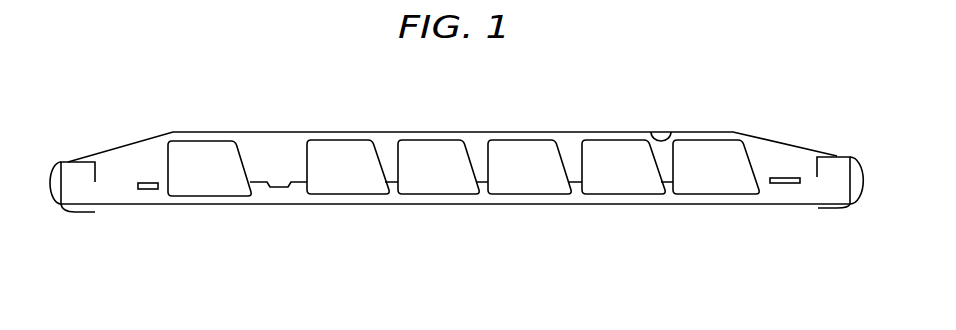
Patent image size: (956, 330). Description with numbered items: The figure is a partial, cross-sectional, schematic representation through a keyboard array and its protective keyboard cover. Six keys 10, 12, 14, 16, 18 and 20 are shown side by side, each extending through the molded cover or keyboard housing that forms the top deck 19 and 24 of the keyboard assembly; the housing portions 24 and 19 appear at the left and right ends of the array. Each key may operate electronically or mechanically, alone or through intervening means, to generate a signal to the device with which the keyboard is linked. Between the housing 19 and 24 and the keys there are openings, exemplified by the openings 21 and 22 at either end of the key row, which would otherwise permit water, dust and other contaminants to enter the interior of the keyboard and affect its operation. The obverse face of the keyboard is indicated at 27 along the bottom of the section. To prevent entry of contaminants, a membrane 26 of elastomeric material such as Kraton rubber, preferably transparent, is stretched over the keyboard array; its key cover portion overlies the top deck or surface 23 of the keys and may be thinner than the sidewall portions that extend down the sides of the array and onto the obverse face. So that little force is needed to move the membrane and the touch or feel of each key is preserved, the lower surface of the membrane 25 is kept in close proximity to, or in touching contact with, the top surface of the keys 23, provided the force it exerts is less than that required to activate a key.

The key 10 is at (199, 183).
The key 12 is at (337, 182).
The key 14 is at (428, 182).
The key 16 is at (519, 182).
The key 18 is at (613, 182).
The key 20 is at (705, 182).
The keyboard housing top deck 19 is at (830, 157).
The opening 21 is at (162, 183).
The opening 22 is at (765, 183).
The top surface of the key 23 is at (610, 140).
The keyboard housing top deck 24 is at (72, 162).
The lower surface of the membrane 25 is at (670, 133).
The membrane 26 is at (530, 131).
The obverse face of the keyboard 27 is at (518, 205).